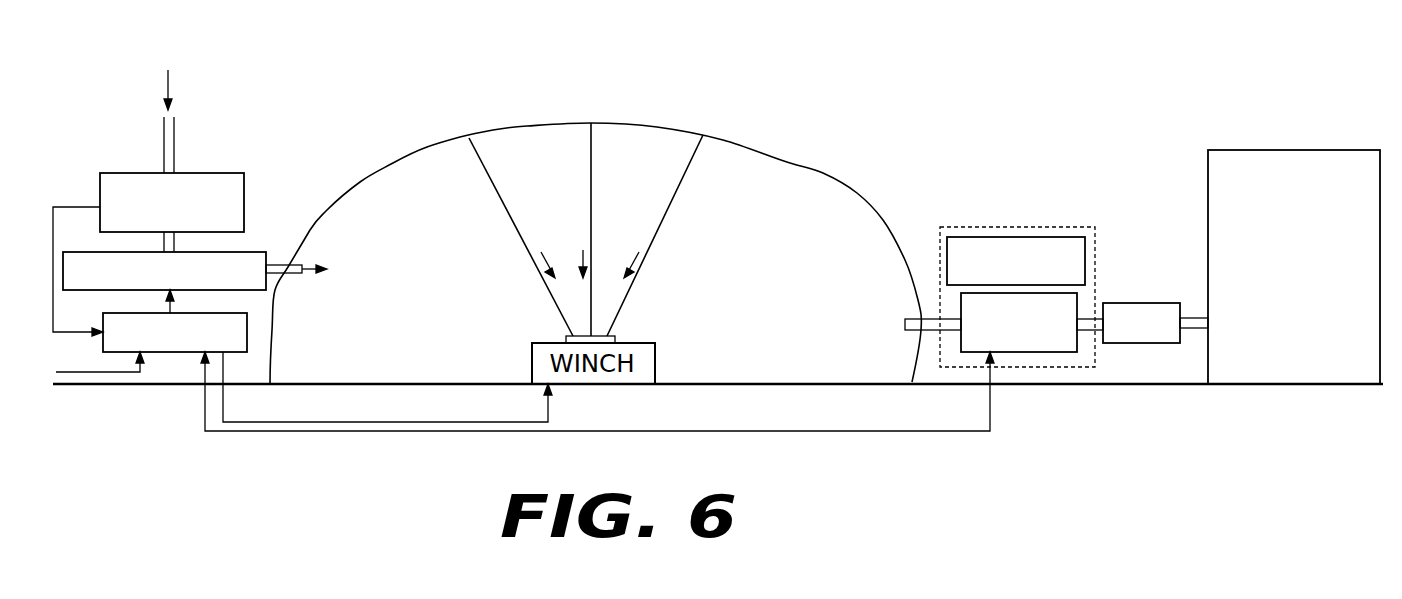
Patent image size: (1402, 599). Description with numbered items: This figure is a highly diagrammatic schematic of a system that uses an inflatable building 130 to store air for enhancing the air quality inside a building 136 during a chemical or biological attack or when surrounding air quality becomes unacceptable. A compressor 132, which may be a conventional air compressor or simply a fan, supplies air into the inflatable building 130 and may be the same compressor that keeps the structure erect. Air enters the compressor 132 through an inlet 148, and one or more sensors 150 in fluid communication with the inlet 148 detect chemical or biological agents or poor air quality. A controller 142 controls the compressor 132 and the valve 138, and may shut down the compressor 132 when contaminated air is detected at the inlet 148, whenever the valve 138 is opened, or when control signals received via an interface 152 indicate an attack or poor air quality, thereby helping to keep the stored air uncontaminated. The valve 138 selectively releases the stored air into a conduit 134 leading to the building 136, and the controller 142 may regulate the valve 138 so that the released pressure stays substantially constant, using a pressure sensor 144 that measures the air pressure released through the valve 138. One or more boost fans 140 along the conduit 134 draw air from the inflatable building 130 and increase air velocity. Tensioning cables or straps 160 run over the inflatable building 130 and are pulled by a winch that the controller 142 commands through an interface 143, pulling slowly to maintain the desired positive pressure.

The inflatable building 130 is at (828, 190).
The tensioning cables or straps 160 is at (487, 168).
The inlet 148 is at (171, 147).
The sensors 150 is at (107, 183).
The compressor 132 is at (262, 250).
The controller 142 is at (179, 352).
The interface 152 is at (98, 372).
The interface 143 is at (387, 431).
The conduit 134 is at (1097, 317).
The pressure sensor 144 is at (975, 245).
The valve 138 is at (1045, 343).
The boost fan 140 is at (1168, 312).
The building 136 is at (1247, 158).